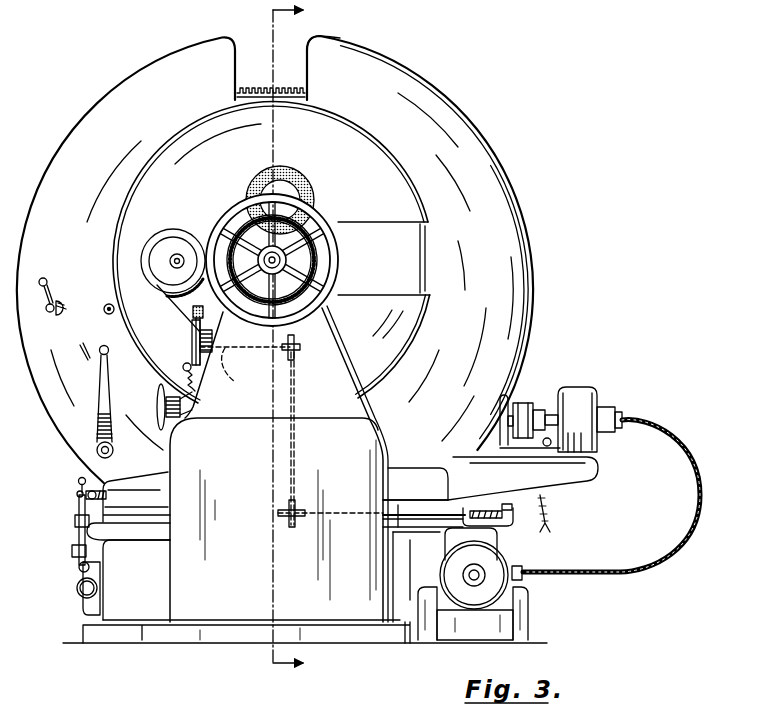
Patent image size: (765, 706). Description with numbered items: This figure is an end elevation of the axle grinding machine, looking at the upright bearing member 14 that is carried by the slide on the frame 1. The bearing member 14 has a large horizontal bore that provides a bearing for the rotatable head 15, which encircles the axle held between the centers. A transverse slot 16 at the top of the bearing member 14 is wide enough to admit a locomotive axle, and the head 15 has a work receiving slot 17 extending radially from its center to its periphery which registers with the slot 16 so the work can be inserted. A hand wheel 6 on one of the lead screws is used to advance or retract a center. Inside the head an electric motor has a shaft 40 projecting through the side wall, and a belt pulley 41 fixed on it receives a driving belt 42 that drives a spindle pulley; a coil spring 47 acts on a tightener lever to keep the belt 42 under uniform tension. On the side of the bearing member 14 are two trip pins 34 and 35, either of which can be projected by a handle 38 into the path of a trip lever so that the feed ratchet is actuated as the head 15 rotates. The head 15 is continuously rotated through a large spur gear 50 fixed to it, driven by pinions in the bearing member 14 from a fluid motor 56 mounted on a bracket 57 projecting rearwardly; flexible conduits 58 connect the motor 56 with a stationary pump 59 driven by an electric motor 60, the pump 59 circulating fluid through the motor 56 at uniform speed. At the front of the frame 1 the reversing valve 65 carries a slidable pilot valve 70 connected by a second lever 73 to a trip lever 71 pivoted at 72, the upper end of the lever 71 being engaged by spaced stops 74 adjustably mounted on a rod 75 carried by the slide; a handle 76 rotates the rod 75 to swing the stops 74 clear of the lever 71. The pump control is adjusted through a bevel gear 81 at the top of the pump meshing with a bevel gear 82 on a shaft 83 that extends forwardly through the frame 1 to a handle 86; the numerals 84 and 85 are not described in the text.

The frame 1 is at (127, 620).
The hand wheel 6 is at (330, 222).
The bearing member 14 is at (522, 292).
The rotatable head 15 is at (189, 130).
The transverse slot 16 is at (300, 50).
The work receiving slot 17 is at (370, 283).
The trip pin 34 is at (107, 305).
The trip pin 35 is at (106, 313).
The handle 38 is at (56, 296).
The motor shaft 40 is at (176, 259).
The belt pulley 41 is at (185, 240).
The driving belt 42 is at (172, 298).
The coil spring 47 is at (184, 366).
The spur gear 50 is at (255, 88).
The fluid motor 56 is at (585, 393).
The bracket 57 is at (575, 478).
The flexible conduits 58 is at (650, 426).
The pump 59 is at (497, 540).
The electric motor 60 is at (522, 598).
The reversing valve 65 is at (82, 610).
The pilot valve 70 is at (78, 590).
The trip lever 71 is at (76, 520).
The pivot 72 is at (73, 542).
The second lever 73 is at (77, 565).
The stops 74 is at (79, 499).
The rod 75 is at (77, 493).
The handle 76 is at (80, 481).
The bevel gear 81 is at (505, 517).
The bevel gear 82 is at (475, 511).
The shaft 83 is at (405, 515).
The rod 84 is at (294, 478).
The lever 85 is at (245, 375).
The handle 86 is at (205, 314).